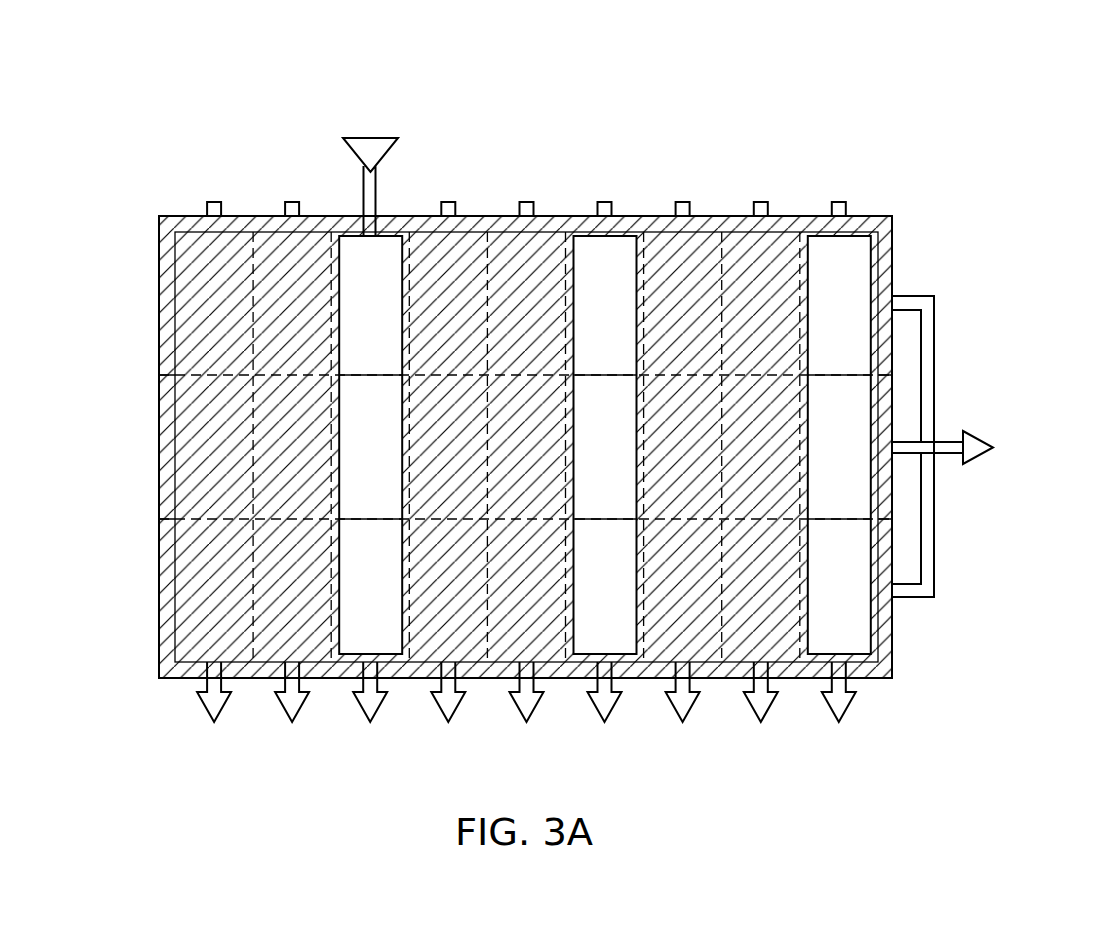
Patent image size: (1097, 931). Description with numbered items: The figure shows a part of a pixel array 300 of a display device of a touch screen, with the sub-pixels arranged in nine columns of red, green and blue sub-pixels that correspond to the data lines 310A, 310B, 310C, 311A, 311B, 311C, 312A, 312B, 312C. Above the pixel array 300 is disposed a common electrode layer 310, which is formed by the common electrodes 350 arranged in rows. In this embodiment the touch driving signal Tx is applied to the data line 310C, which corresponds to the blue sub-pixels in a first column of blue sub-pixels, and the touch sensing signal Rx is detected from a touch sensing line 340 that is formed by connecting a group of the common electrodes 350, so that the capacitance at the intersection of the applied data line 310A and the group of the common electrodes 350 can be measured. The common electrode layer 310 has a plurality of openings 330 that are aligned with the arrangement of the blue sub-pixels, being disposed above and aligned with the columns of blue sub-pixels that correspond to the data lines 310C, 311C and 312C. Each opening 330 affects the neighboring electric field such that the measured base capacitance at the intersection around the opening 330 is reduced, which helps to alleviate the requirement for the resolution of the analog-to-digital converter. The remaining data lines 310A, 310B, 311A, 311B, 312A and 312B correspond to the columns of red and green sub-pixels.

The pixel array 300 is at (949, 142).
The common electrode layer 310 is at (493, 228).
The opening 330 is at (385, 228).
The touch sensing line 340 is at (952, 443).
The common electrode 350 is at (168, 301).
The data line 310A is at (193, 645).
The sub-pixel column 310B is at (271, 645).
The data line 310C is at (349, 645).
The data line 311A is at (427, 645).
The sub-pixel column 311B is at (505, 645).
The sub-pixel column 311C is at (583, 645).
The sub-pixel column 312A is at (661, 645).
The sub-pixel column 312B is at (740, 645).
The sub-pixel column 312C is at (818, 645).